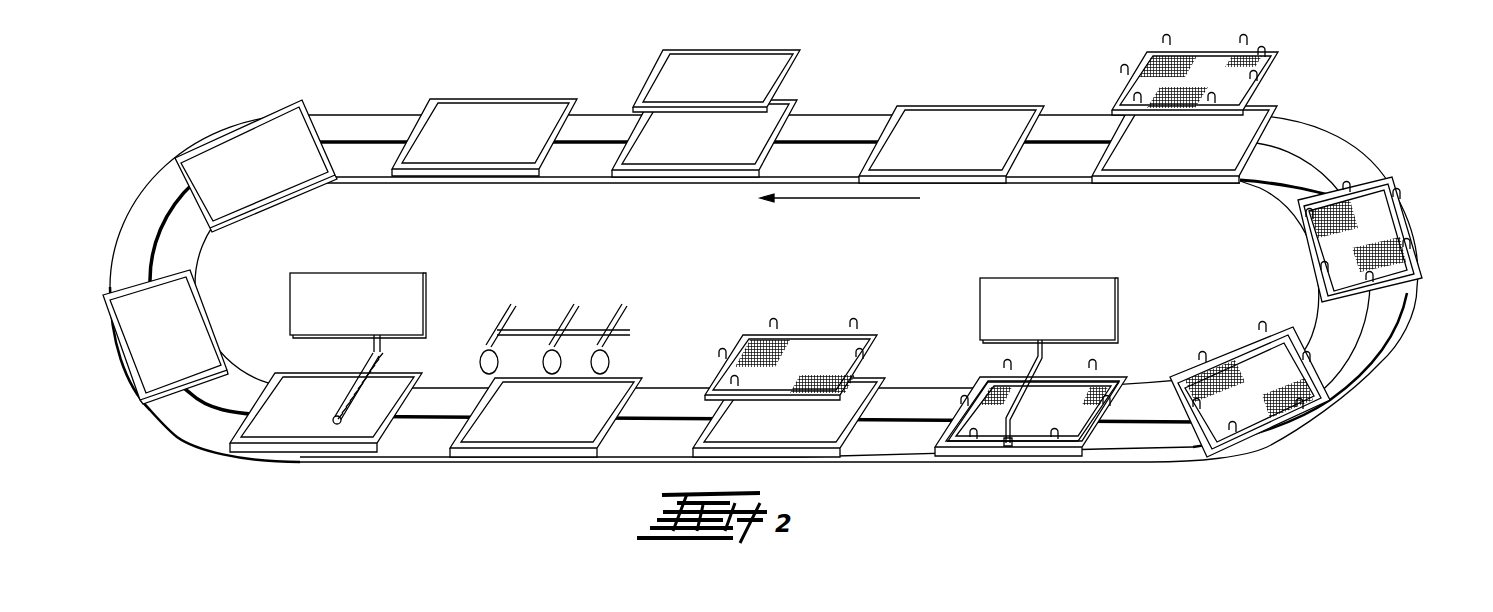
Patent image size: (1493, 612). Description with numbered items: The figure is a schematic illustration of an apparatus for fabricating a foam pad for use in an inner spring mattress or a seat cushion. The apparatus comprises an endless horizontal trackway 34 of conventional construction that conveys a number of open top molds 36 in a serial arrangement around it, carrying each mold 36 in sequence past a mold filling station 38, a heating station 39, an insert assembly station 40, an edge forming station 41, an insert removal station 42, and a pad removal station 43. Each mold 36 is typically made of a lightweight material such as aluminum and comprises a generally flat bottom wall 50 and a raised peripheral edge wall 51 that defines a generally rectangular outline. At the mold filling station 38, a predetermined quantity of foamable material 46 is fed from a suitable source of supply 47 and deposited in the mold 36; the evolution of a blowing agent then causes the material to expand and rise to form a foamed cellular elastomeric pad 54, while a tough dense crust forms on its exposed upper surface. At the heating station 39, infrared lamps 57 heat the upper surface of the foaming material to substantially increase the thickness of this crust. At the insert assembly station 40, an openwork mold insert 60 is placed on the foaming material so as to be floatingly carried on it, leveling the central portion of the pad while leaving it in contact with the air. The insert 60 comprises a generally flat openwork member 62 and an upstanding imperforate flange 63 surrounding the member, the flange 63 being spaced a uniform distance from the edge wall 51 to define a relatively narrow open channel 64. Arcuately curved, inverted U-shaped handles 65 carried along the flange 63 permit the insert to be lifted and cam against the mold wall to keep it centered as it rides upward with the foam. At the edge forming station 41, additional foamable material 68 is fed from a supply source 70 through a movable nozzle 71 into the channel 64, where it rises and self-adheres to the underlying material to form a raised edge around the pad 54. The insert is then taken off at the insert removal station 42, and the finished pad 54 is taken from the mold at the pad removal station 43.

The endless horizontal trackway 34 is at (378, 128).
The open top mold 36 is at (226, 230).
The mold filling station 38 is at (290, 480).
The heating station 39 is at (501, 508).
The insert assembly station 40 is at (833, 478).
The edge forming station 41 is at (1050, 488).
The insert removal station 42 is at (1296, 76).
The pad removal station 43 is at (817, 50).
The foamable material 46 is at (377, 378).
The source of supply 47 is at (424, 246).
The bottom wall 50 is at (256, 135).
The peripheral edge wall 51 is at (195, 150).
The foamed cellular elastomeric pad 54 is at (768, 40).
The infrared lamps 57 is at (483, 358).
The openwork mold insert 60 is at (1216, 38).
The openwork member 62 is at (1150, 54).
The imperforate flange 63 is at (1263, 56).
The open channel 64 is at (1135, 355).
The handles 65 is at (1245, 44).
The additional foamable material 68 is at (1001, 448).
The supply source 70 is at (1116, 297).
The movable nozzle 71 is at (1012, 425).